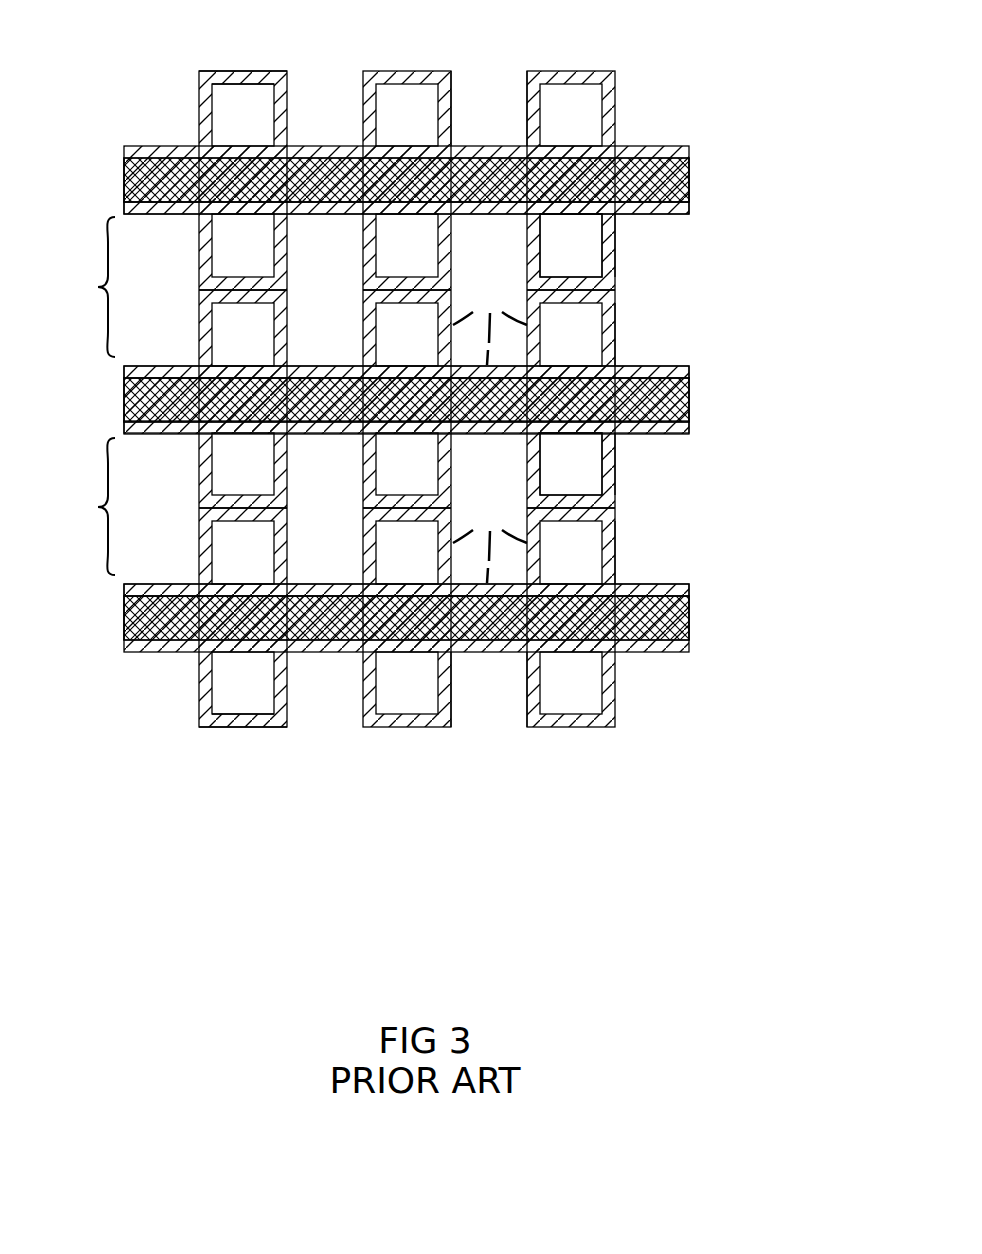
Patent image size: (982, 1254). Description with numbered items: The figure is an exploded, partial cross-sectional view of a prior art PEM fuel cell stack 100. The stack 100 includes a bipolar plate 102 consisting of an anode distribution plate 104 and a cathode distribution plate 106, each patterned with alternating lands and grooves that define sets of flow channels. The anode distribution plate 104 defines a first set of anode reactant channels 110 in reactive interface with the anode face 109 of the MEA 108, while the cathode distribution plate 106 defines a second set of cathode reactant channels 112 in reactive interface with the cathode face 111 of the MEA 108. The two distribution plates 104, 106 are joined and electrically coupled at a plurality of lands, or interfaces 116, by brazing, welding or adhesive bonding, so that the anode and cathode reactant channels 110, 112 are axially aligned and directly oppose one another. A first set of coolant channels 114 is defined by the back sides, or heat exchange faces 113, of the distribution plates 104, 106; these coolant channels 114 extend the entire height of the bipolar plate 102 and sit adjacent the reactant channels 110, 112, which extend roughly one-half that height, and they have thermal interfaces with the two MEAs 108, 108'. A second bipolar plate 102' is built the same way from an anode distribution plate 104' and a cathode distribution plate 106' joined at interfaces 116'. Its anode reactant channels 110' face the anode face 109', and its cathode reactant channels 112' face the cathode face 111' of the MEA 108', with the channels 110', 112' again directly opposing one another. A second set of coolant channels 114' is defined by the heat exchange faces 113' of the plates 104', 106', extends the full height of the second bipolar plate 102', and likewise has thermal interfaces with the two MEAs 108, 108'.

The PEM fuel cell stack 100 is at (567, 793).
The bipolar plate 102 is at (82, 287).
The second bipolar plate 102' is at (83, 506).
The anode distribution plate 104 is at (447, 219).
The anode distribution plate 104' is at (450, 437).
The cathode distribution plate 106 is at (450, 361).
The cathode distribution plate 106' is at (453, 579).
The MEA 108 is at (458, 400).
The MEA 108' is at (462, 623).
The anode face 109 is at (670, 240).
The anode face 109' is at (673, 458).
The anode reactant channels 110 is at (612, 250).
The anode reactant channels 110' is at (615, 469).
The cathode face 111 is at (667, 340).
The cathode face 111' is at (670, 558).
The cathode reactant channels 112 is at (625, 305).
The cathode reactant channels 112' is at (628, 524).
The heat exchange faces 113 is at (490, 291).
The heat exchange faces 113' is at (490, 510).
The coolant channels 114 is at (489, 133).
The coolant channels 114' is at (489, 659).
The interfaces 116 is at (248, 206).
The interfaces 116' is at (325, 542).